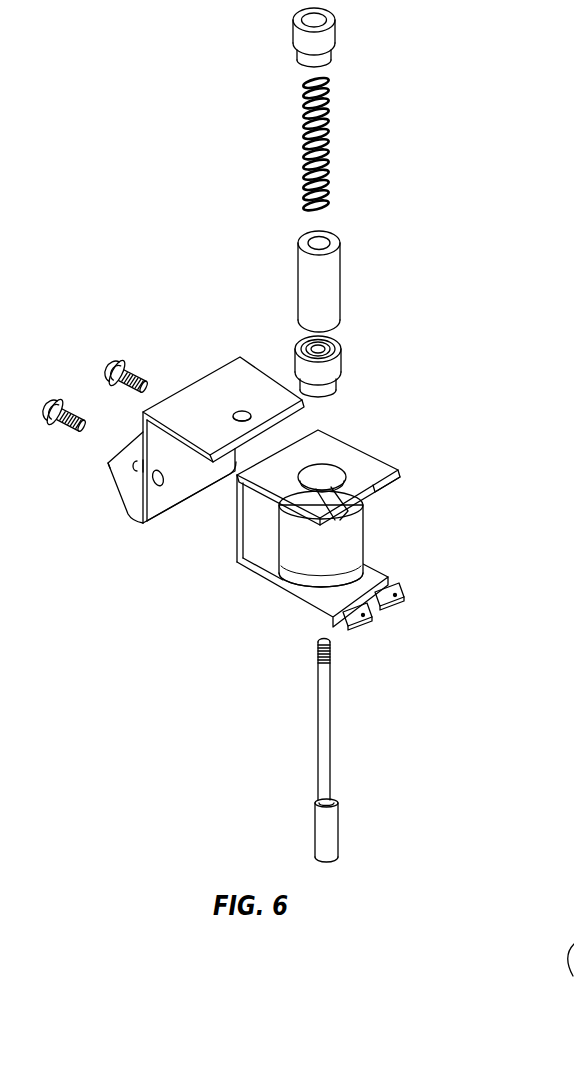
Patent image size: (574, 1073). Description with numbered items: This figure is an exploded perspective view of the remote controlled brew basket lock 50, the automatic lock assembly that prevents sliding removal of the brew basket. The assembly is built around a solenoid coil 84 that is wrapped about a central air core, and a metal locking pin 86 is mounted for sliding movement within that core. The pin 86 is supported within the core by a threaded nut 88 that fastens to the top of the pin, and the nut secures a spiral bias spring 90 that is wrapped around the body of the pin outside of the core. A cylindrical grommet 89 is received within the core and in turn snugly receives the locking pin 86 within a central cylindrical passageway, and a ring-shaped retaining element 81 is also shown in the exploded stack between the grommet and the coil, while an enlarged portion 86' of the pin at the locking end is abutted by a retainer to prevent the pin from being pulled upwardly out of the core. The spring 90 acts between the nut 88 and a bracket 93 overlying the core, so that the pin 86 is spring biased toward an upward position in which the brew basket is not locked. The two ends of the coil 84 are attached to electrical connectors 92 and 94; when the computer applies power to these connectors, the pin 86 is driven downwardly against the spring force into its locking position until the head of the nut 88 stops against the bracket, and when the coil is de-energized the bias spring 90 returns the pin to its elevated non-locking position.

The remote controlled brew basket lock 50 is at (435, 394).
The bearing 81 is at (340, 362).
The solenoid coil 84 is at (355, 532).
The locking pin 86 is at (352, 720).
The enlarged portion of the pin 86' is at (355, 830).
The threaded nut 88 is at (333, 34).
The cylindrical grommet 89 is at (333, 287).
The spiral bias spring 90 is at (330, 137).
The electrical connector 92 is at (372, 619).
The bracket 93 is at (231, 366).
The electrical connector 94 is at (404, 592).